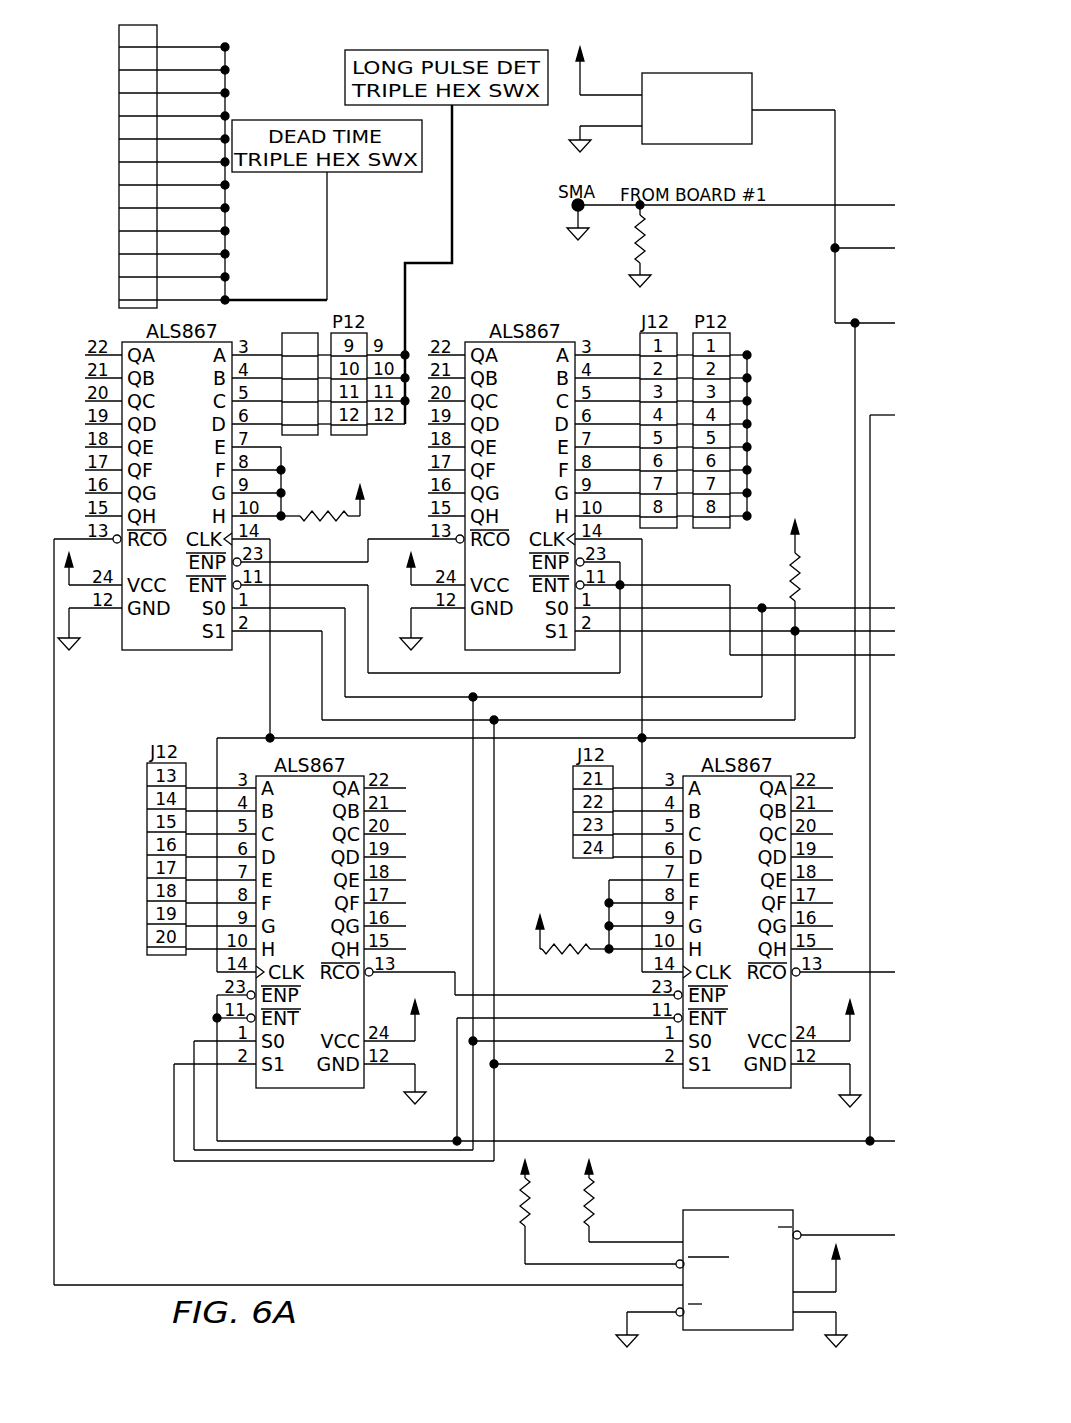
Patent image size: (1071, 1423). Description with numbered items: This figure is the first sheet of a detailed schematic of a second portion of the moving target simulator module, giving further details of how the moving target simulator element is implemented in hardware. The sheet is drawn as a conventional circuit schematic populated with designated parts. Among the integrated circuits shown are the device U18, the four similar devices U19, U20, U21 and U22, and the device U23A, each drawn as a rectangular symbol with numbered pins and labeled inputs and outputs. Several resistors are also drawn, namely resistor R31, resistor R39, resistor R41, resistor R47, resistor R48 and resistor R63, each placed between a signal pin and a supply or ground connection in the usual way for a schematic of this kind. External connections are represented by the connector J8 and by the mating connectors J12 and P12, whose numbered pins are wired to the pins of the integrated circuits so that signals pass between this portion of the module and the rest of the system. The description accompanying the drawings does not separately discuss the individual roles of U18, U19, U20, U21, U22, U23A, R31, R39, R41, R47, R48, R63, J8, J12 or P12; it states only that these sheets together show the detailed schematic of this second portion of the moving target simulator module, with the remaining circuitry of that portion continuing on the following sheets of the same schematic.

The connector P12 is at (174, 155).
The connector J12 is at (300, 373).
The AC53 oscillator U18 is at (694, 94).
The SMA connector J8 is at (584, 219).
The resistor R31 is at (645, 244).
The ALS867 counter U20 is at (211, 496).
The 5K resistor R63 is at (328, 507).
The ALS867 counter U19 is at (647, 496).
The 2K resistor R39 is at (796, 608).
The ALS867 counter U21 is at (314, 931).
The ALS867 counter U22 is at (684, 933).
The 5K resistor R41 is at (572, 950).
The 5K resistor R48 is at (582, 1210).
The 5K resistor R47 is at (617, 1199).
The LS123 monostable U23A is at (755, 1271).